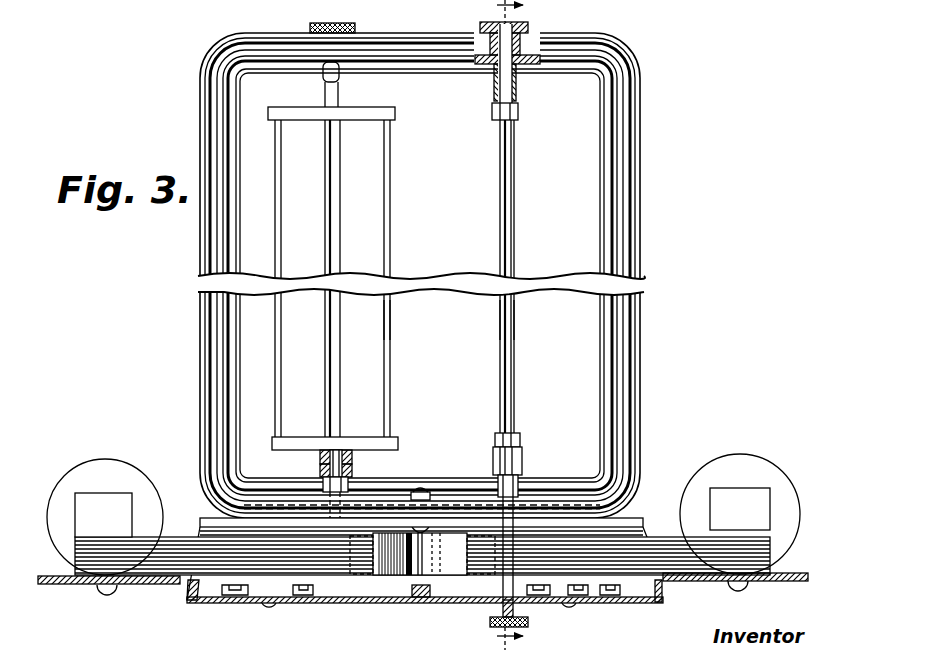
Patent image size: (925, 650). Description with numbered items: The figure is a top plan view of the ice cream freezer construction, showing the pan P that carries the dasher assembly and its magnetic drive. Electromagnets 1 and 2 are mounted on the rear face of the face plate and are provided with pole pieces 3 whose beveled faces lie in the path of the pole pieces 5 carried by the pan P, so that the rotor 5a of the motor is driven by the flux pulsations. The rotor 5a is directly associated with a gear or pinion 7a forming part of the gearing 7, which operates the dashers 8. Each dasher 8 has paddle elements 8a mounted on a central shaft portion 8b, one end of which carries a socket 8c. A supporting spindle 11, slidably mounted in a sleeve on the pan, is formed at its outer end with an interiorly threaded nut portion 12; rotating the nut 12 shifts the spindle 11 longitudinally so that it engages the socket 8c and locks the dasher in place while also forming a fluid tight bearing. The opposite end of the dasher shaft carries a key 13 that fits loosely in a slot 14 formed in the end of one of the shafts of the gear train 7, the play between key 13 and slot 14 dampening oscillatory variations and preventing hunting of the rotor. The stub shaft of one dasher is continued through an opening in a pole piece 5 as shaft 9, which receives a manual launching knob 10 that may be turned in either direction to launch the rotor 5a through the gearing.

The pan P is at (614, 388).
The electromagnet 1 is at (742, 489).
The electromagnet 2 is at (105, 517).
The pole pieces 3 is at (216, 548).
The pole pieces 5 is at (248, 562).
The rotor 5a is at (413, 558).
The gearing 7 is at (368, 509).
The gear or pinion 7a is at (437, 506).
The dasher 8 is at (514, 409).
The dasher or paddle elements 8a is at (509, 337).
The central shaft portion 8b is at (377, 200).
The socket 8c is at (520, 93).
The shaft 9 is at (500, 590).
The manual launching knob 10 is at (530, 622).
The supporting spindle 11 is at (497, 77).
The nut portion 12 is at (341, 24).
The key 13 is at (322, 462).
The slot 14 is at (353, 460).